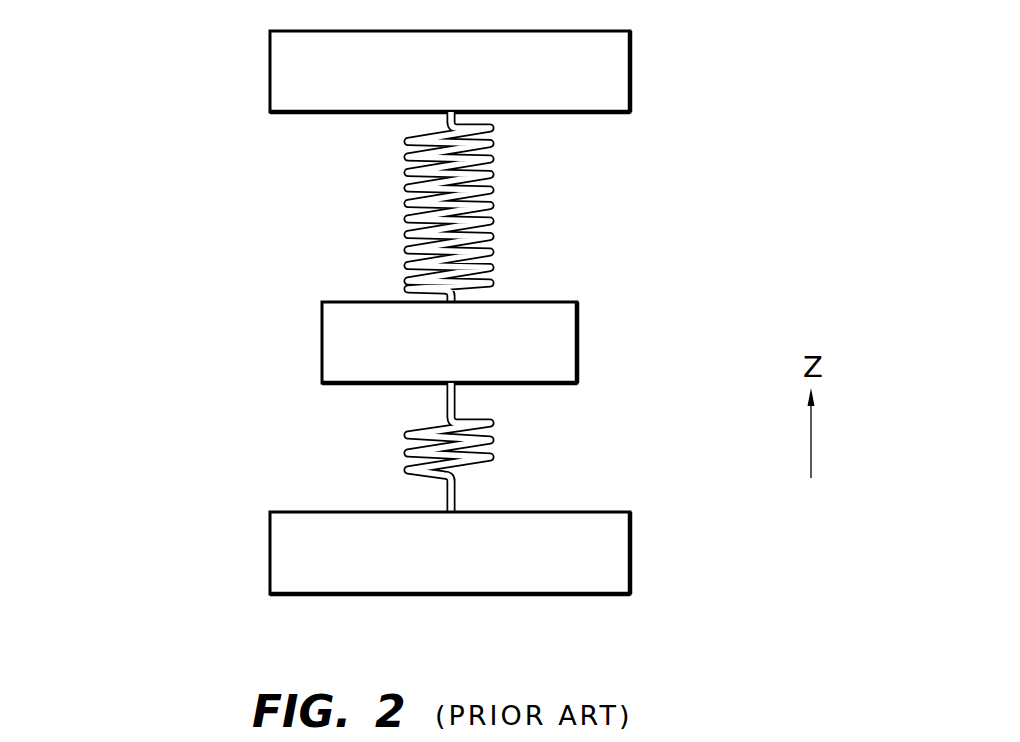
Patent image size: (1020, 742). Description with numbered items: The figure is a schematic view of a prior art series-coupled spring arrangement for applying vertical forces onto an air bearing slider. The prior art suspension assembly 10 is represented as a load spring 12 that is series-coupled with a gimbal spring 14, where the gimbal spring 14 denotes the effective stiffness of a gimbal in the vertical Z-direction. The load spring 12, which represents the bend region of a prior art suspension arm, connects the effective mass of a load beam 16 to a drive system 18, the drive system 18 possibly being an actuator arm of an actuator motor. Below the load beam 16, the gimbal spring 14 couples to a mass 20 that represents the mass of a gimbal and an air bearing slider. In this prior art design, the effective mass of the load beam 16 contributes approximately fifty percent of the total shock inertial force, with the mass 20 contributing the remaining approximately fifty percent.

The suspension assembly 10 is at (770, 92).
The load spring 12 is at (408, 222).
The gimbal spring 14 is at (408, 456).
The load beam 16 is at (332, 344).
The drive system 18 is at (281, 64).
The mass 20 is at (281, 551).